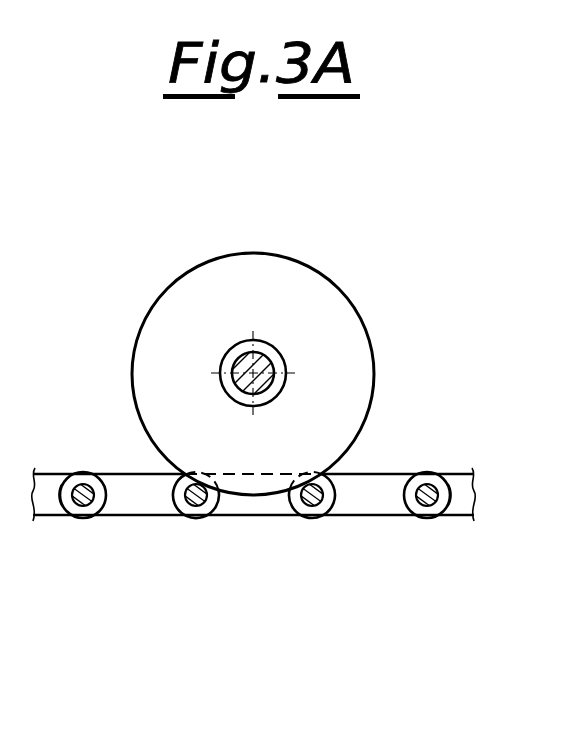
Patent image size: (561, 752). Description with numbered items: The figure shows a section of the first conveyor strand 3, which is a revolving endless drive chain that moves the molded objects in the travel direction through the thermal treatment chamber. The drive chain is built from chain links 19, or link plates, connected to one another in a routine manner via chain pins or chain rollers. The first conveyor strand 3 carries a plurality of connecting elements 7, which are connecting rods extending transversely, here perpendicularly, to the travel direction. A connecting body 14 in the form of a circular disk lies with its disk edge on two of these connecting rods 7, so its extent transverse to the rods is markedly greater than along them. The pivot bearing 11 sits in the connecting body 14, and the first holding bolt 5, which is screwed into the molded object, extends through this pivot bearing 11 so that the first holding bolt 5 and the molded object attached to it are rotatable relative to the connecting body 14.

The first conveyor strand 3 is at (442, 541).
The first holding bolt 5 is at (226, 349).
The connecting elements 7 is at (189, 493).
The pivot bearing 11 is at (269, 349).
The connecting body 14 is at (310, 291).
The chain links 19 is at (119, 502).